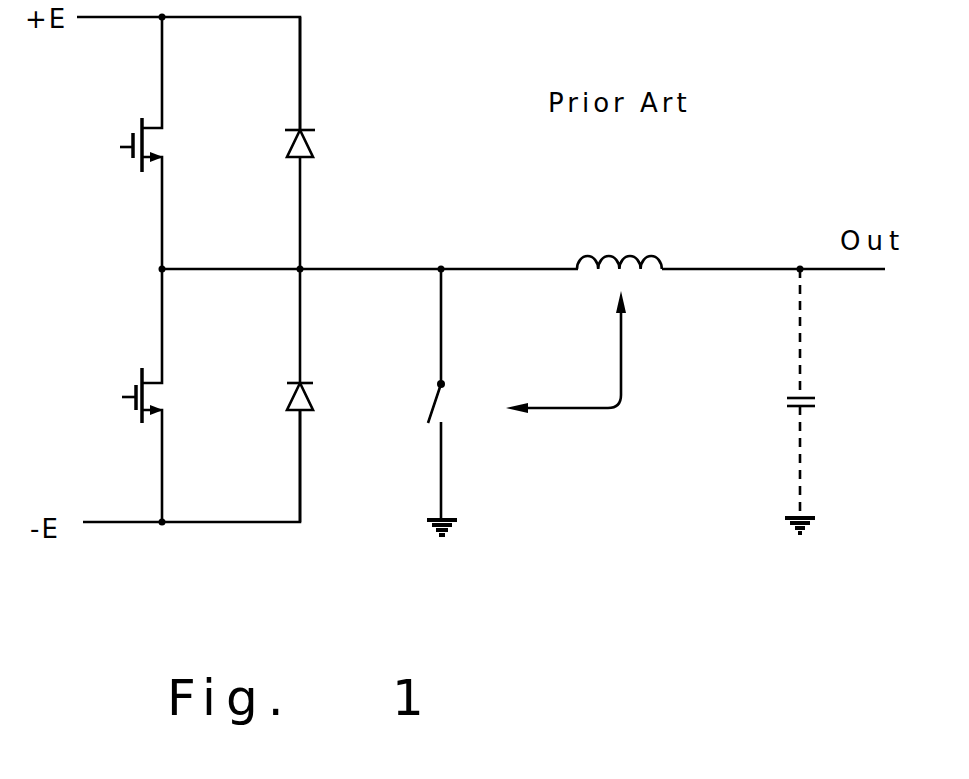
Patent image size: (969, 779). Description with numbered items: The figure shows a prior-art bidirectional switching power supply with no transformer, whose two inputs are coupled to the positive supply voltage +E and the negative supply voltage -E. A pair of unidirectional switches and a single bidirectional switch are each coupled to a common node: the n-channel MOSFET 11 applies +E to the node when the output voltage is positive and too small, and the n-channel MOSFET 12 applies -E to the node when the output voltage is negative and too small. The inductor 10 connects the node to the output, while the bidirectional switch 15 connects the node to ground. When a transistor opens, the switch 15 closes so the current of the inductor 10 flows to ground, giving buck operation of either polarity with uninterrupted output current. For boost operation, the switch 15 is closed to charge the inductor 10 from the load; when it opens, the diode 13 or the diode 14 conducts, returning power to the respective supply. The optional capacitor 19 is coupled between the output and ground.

The inductor 10 is at (667, 240).
The n-channel MOSFET 11 is at (135, 156).
The n-channel MOSFET 12 is at (141, 383).
The diode 13 is at (314, 157).
The diode 14 is at (313, 410).
The bidirectional switch 15 is at (433, 409).
The optional capacitor 19 is at (815, 406).